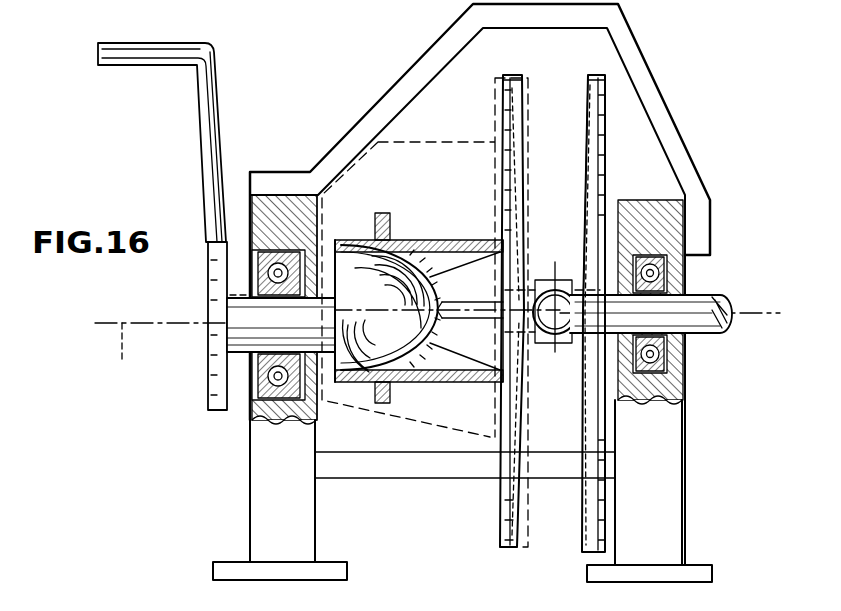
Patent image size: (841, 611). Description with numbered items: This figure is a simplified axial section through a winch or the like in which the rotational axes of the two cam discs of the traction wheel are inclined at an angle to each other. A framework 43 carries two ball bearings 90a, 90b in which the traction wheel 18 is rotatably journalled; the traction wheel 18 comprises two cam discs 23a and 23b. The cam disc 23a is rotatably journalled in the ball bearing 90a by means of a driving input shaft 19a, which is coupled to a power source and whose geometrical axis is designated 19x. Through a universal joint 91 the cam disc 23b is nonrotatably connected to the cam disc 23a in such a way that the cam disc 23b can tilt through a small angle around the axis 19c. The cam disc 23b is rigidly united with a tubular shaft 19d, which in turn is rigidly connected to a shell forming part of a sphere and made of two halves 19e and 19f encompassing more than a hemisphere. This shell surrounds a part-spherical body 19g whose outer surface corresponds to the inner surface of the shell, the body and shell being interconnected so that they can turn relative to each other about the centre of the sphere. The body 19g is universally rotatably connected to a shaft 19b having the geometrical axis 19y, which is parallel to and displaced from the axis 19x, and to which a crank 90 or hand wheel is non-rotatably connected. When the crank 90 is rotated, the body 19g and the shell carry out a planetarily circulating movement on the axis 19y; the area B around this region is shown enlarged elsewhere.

The traction wheel 18 is at (557, 118).
The driving input shaft 19a is at (695, 302).
The shaft 19b is at (316, 360).
The axis 19c is at (572, 235).
The tubular shaft 19d is at (420, 382).
The shell half 19e is at (430, 300).
The shell half 19f is at (375, 225).
The body 19g is at (423, 347).
The geometrical axis 19x is at (748, 313).
The geometrical axis 19y is at (122, 324).
The cam disc 23a is at (597, 110).
The cam disc 23b is at (510, 92).
The framework 43 is at (400, 77).
The crank 90 is at (212, 128).
The ball bearing 90a is at (655, 353).
The ball bearing 90b is at (270, 378).
The universal joint 91 is at (542, 350).
The area B is at (440, 142).